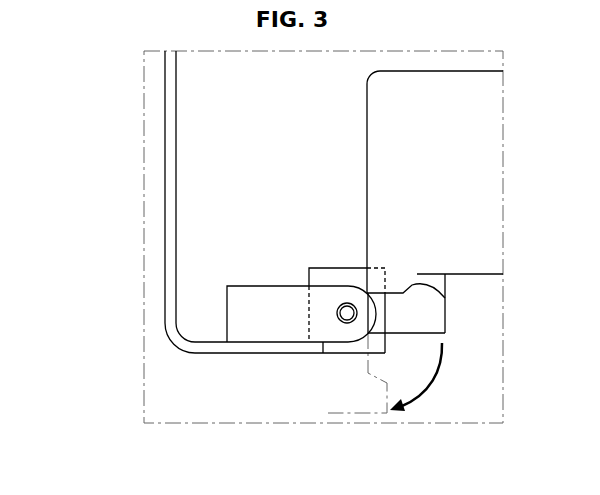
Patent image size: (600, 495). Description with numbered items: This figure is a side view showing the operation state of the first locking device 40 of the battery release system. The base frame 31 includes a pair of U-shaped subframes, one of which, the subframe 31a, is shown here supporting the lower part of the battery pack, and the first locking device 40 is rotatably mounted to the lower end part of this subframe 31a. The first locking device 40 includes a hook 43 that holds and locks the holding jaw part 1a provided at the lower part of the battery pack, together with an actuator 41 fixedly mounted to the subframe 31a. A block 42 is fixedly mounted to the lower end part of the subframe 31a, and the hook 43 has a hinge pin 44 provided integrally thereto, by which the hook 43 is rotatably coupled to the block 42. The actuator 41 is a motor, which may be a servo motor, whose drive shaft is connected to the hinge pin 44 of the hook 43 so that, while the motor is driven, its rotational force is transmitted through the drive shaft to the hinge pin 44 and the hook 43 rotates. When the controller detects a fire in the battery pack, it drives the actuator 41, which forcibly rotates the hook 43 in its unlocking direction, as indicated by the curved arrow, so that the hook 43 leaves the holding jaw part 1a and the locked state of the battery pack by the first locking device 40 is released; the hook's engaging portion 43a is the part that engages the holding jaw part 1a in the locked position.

The base frame 31 is at (203, 202).
The subframe 31a is at (165, 285).
The holding jaw part 1a is at (445, 298).
The first locking device 40 is at (288, 268).
The actuator 41 is at (337, 268).
The block 42 is at (270, 325).
The hook 43 is at (437, 319).
The hook portion of rotating member 43a is at (413, 283).
The hinge pin 44 is at (341, 323).